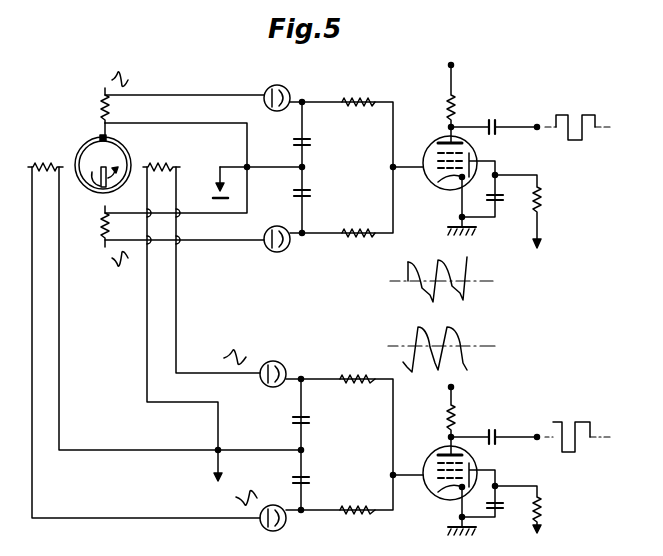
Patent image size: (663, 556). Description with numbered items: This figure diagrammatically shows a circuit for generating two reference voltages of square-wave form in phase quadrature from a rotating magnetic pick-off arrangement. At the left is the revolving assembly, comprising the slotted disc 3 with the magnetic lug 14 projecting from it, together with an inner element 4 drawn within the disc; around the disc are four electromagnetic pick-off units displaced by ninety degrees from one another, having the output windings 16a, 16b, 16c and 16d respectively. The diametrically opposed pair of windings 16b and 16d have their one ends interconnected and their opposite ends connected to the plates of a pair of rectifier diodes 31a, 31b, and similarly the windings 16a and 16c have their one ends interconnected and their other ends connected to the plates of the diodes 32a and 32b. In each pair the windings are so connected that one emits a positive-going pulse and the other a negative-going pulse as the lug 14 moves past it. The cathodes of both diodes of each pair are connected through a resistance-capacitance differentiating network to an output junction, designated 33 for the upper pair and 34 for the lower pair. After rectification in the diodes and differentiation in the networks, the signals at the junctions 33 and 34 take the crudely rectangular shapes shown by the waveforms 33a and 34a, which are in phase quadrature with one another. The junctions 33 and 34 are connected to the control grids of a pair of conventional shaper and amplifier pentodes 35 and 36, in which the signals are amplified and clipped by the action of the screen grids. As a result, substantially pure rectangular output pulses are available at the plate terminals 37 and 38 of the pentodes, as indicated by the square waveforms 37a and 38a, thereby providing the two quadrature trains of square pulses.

The slotted disc 3 is at (114, 153).
The rotating beam element 4 is at (98, 184).
The magnetic lug 14 is at (100, 137).
The output winding 16a is at (46, 166).
The output winding 16b is at (103, 103).
The output winding 16c is at (161, 166).
The output winding 16d is at (103, 232).
The rectifier diode 31a is at (265, 84).
The rectifier diode 31b is at (265, 227).
The rectifier diode 32a is at (279, 362).
The rectifier diode 32b is at (270, 506).
The output junction 33 is at (393, 167).
The waveform 33a is at (441, 271).
The output junction 34 is at (393, 475).
The waveform 34a is at (441, 339).
The shaper and amplifier pentode 35 is at (437, 145).
The shaper and amplifier pentode 36 is at (433, 449).
The plate terminal 37 is at (537, 125).
The waveform 37a is at (577, 115).
The plate terminal 38 is at (537, 435).
The waveform 38a is at (577, 427).